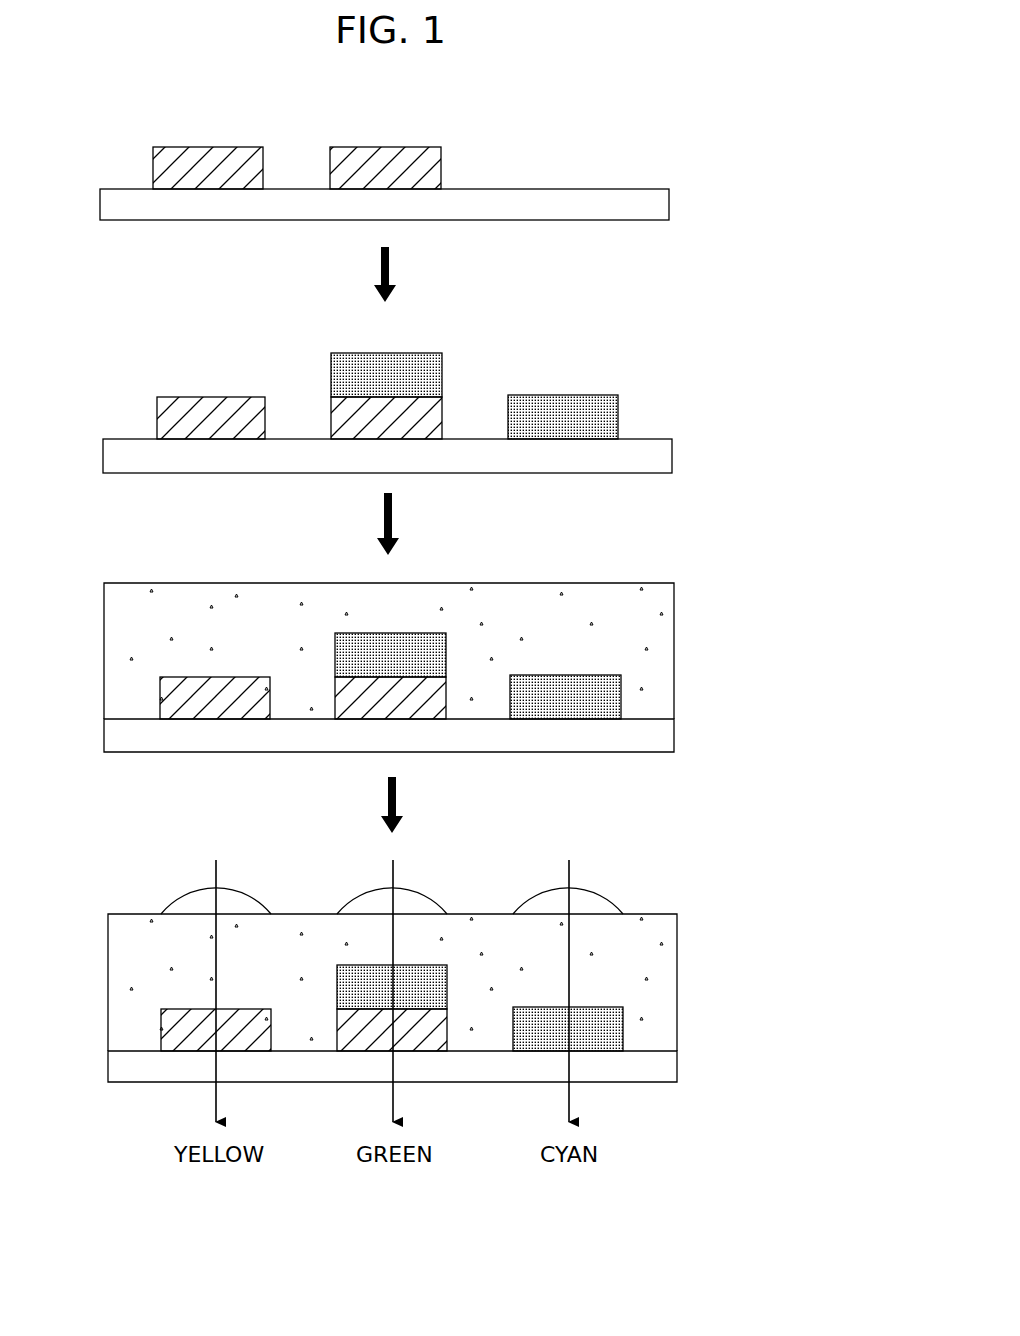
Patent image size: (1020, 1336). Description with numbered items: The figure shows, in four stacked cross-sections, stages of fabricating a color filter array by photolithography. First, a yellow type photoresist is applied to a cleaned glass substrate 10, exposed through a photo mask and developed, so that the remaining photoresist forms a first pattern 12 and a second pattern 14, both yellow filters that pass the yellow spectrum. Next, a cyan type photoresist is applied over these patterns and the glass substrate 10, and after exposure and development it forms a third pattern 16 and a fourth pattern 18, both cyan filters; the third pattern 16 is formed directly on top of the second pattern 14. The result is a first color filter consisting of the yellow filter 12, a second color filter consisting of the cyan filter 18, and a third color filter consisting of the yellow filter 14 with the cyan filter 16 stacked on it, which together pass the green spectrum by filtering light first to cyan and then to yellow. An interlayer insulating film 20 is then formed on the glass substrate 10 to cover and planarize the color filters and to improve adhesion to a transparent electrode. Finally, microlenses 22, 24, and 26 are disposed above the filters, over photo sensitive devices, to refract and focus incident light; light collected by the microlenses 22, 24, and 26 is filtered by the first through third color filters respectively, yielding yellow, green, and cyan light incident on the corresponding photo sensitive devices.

The glass substrate 10 is at (669, 205).
The first pattern 12 is at (208, 147).
The second pattern 14 is at (382, 147).
The third pattern 16 is at (382, 353).
The fourth pattern 18 is at (558, 395).
The interlayer insulating film 20 is at (674, 648).
The microlens 22 is at (234, 888).
The microlens 24 is at (409, 888).
The microlens 26 is at (584, 888).